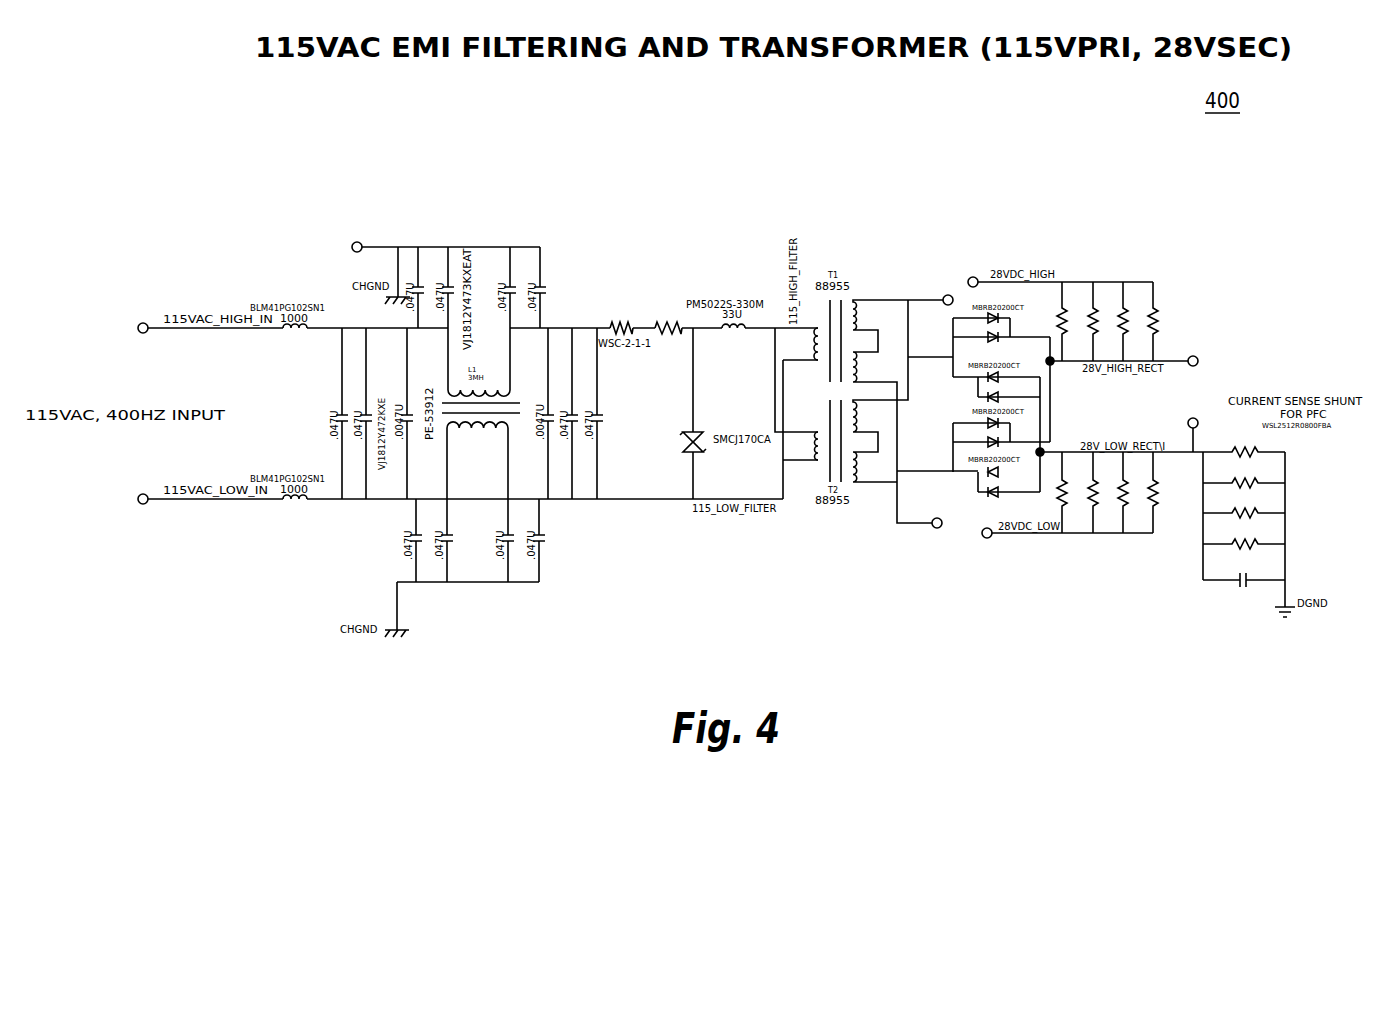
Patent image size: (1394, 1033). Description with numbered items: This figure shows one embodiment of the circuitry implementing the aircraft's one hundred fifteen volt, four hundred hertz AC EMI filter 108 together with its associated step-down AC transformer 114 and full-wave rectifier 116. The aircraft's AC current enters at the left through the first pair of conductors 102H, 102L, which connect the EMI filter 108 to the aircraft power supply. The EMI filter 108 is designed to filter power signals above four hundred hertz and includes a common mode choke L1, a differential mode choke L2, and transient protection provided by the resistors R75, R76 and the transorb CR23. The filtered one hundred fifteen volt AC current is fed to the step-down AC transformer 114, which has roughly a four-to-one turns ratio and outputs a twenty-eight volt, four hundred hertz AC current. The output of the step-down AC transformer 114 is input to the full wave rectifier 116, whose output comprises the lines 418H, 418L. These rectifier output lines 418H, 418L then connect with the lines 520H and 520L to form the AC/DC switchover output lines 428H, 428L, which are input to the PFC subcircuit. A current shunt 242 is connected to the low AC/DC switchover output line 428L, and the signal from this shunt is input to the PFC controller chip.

The first pair of conductors (high) 102H is at (145, 323).
The first pair of conductors (low) 102L is at (145, 505).
The 115VAC, 400 Hz EMI filter 108 is at (561, 292).
The common mode choke L1 is at (491, 380).
The resistor R75 is at (613, 326).
The resistor R76 is at (679, 326).
The differential mode choke L2 is at (744, 322).
The transorb CR23 is at (683, 452).
The step-down AC transformer 114 is at (897, 288).
The full-wave rectifier 116 is at (953, 278).
The line 520H is at (973, 277).
The line 520L is at (985, 538).
The line 418H is at (1053, 364).
The line 418L is at (1043, 450).
The AC/DC switchover output line 428H is at (1193, 356).
The AC/DC switchover output line 428L is at (1195, 417).
The current shunt 242 is at (1305, 455).